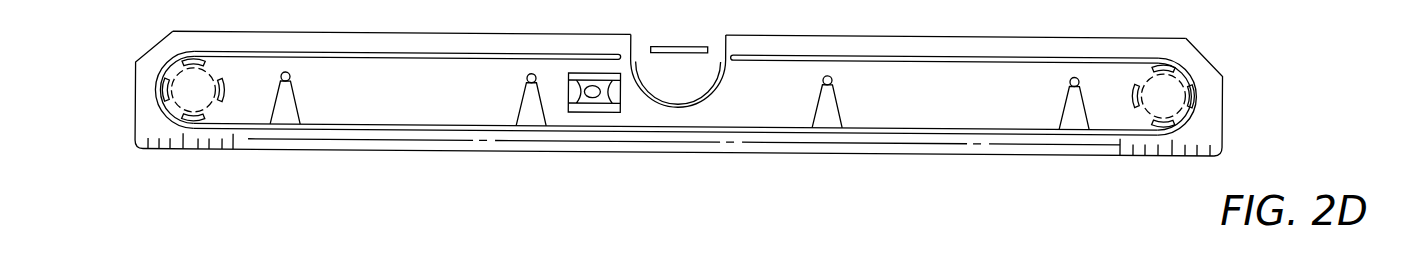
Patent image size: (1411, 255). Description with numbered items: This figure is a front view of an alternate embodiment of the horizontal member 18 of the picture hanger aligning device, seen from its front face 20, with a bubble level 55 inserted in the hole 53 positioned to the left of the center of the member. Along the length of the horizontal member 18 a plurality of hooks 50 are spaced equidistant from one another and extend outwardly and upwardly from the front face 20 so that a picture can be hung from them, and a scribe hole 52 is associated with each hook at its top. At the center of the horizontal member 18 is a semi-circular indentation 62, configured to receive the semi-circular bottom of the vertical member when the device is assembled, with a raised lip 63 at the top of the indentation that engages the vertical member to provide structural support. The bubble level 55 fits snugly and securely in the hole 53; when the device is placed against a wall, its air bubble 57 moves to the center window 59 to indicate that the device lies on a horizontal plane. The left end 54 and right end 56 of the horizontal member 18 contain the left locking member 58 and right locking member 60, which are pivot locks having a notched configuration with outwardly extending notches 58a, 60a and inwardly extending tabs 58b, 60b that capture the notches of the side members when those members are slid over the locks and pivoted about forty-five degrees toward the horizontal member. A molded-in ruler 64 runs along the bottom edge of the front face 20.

The horizontal member 18 is at (750, 152).
The front face 20 is at (705, 119).
The hooks 50 is at (1073, 107).
The scribe holes 52 is at (1071, 78).
The hole 53 is at (591, 76).
The left end 54 is at (136, 134).
The bubble level 55 is at (568, 80).
The right end 56 is at (1223, 110).
The air bubble 57 is at (594, 92).
The left locking member 58 is at (191, 91).
The outwardly extending notch 58a is at (189, 61).
The inwardly extending tab 58b is at (217, 63).
The center window 59 is at (632, 83).
The right locking member 60 is at (1169, 100).
The outwardly extending notch 60a is at (1161, 66).
The inwardly extending tab 60b is at (1192, 74).
The semi-circular indentation 62 is at (642, 101).
The raised lip 63 is at (708, 46).
The molded-in ruler 64 is at (1171, 157).